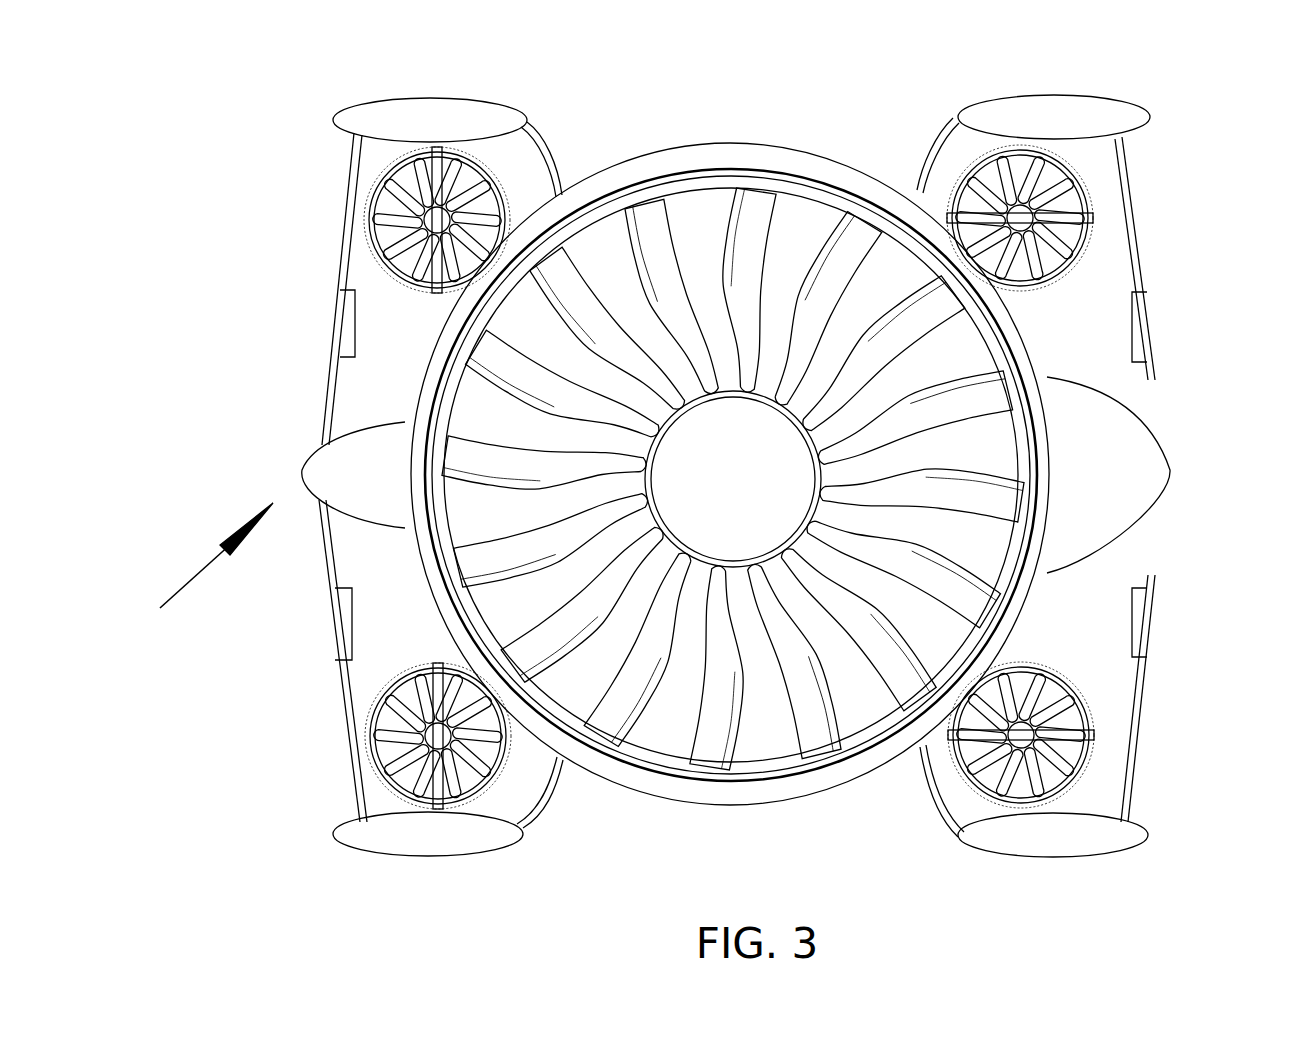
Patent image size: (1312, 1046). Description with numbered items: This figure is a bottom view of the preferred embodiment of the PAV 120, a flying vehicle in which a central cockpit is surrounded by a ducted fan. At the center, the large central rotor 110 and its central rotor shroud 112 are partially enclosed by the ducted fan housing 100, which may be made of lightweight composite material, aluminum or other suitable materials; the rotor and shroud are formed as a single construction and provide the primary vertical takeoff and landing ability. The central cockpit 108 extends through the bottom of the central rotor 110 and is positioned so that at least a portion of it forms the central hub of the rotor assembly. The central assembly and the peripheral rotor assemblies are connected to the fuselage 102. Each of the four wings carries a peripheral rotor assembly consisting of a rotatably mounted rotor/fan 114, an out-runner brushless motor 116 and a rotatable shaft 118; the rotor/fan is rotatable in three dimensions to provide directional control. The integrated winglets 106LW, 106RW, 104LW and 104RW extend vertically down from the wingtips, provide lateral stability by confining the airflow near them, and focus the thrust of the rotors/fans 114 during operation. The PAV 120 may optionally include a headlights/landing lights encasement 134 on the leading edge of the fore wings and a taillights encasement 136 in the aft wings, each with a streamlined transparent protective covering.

The ducted fan housing 100 is at (737, 143).
The fuselage 102 is at (1108, 475).
The winglet 104LW is at (1085, 120).
The winglet 104RW is at (1060, 833).
The winglet 106LW is at (430, 117).
The winglet 106RW is at (437, 833).
The central cockpit 108 is at (735, 485).
The central rotor 110 is at (640, 215).
The central rotor shroud 112 is at (810, 182).
The rotor/fan 114 is at (375, 240).
The out-runner brushless motor 116 is at (438, 222).
The rotatable shaft 118 is at (432, 278).
The PAV 120 is at (208, 571).
The headlights/landing lights encasement 134 is at (1137, 333).
The taillights encasement 136 is at (340, 333).